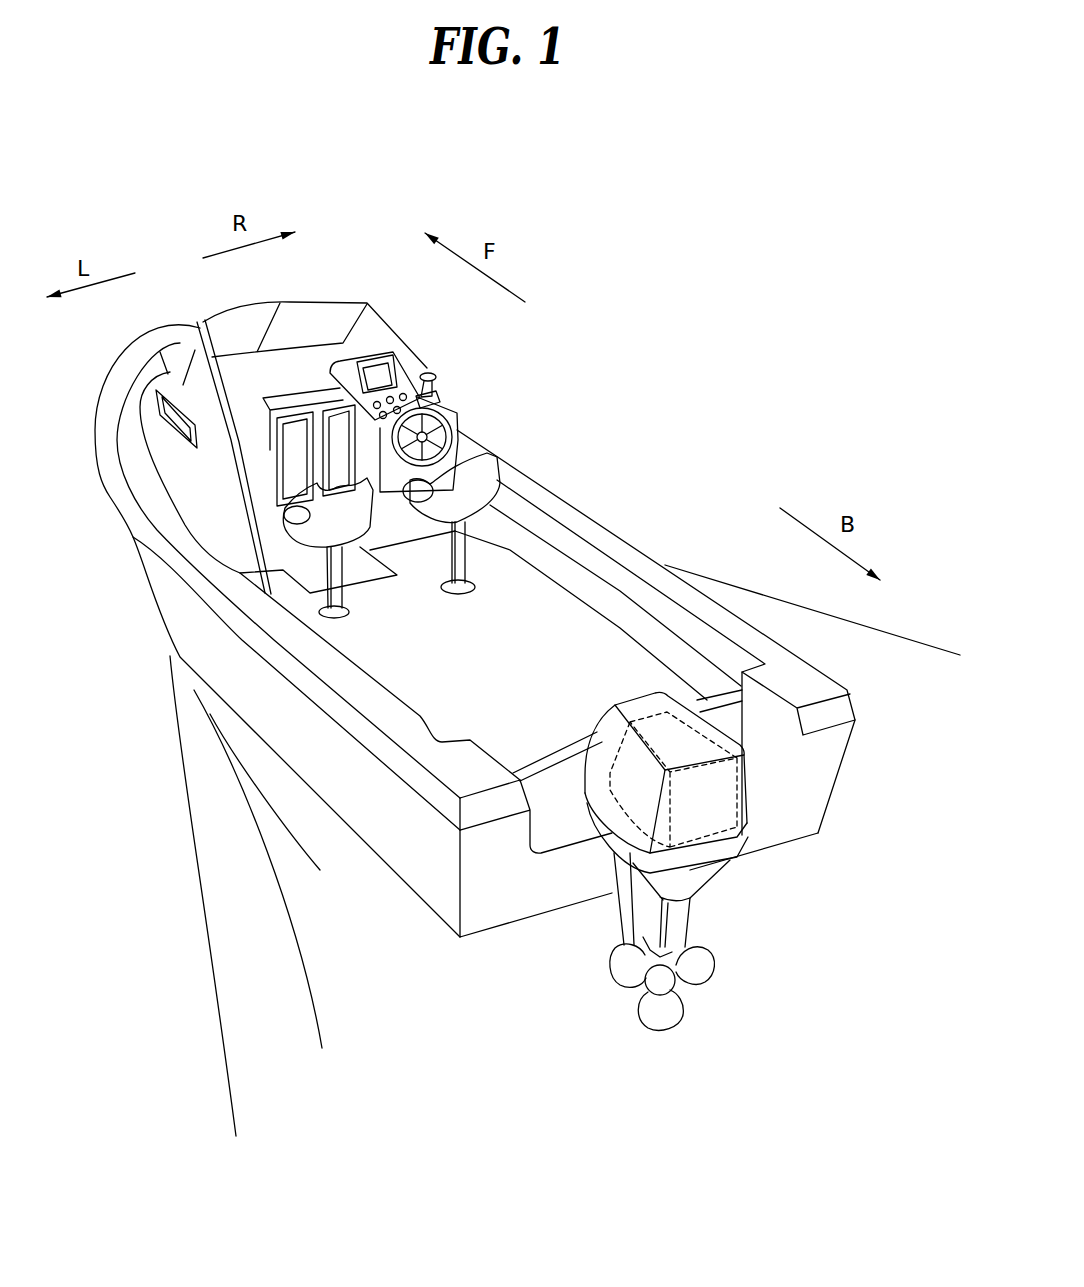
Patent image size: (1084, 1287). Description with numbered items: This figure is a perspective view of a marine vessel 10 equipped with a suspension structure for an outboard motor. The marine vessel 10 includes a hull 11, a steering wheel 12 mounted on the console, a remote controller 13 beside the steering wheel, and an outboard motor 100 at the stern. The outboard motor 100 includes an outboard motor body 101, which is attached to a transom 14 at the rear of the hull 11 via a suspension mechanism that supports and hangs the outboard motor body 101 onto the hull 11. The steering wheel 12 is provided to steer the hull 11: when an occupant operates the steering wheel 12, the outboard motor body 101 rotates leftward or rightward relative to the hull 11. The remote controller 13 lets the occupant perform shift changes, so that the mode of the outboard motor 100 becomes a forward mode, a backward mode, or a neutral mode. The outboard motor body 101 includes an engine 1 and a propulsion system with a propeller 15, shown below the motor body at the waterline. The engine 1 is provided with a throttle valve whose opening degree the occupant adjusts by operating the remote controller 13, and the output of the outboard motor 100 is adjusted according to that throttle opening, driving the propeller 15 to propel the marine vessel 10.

The engine 1 is at (643, 785).
The marine vessel 10 is at (642, 389).
The hull 11 is at (637, 563).
The steering wheel 12 is at (457, 418).
The remote controller 13 is at (434, 362).
The transom 14 is at (533, 758).
The propeller 15 is at (687, 1027).
The outboard motor 100 is at (614, 686).
The outboard motor body 101 is at (750, 823).